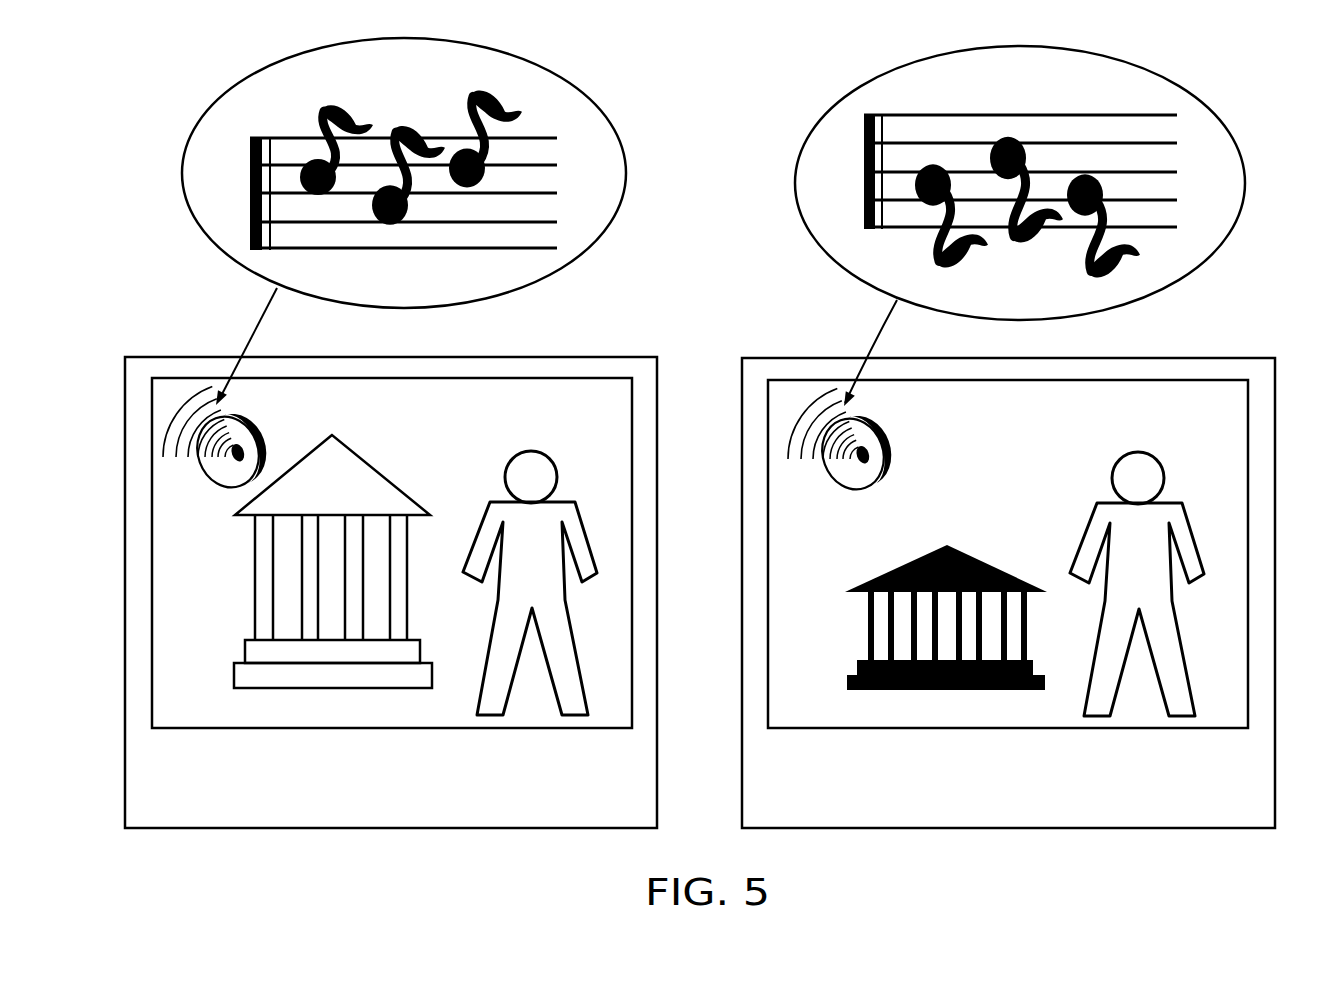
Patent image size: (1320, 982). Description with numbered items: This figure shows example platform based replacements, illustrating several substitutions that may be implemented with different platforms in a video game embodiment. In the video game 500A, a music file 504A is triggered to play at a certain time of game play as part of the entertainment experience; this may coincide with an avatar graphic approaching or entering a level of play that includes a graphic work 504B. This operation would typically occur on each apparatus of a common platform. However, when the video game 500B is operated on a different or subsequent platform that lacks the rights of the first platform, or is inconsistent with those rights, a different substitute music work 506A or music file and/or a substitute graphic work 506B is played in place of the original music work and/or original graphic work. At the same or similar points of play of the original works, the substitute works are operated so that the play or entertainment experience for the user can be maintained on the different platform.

The video game 500A is at (540, 357).
The video game 500B is at (1165, 358).
The audio content of platform A 504A is at (240, 72).
The graphic work 504B is at (332, 435).
The substitute music work 506A is at (858, 78).
The substitute graphic work 506B is at (947, 545).